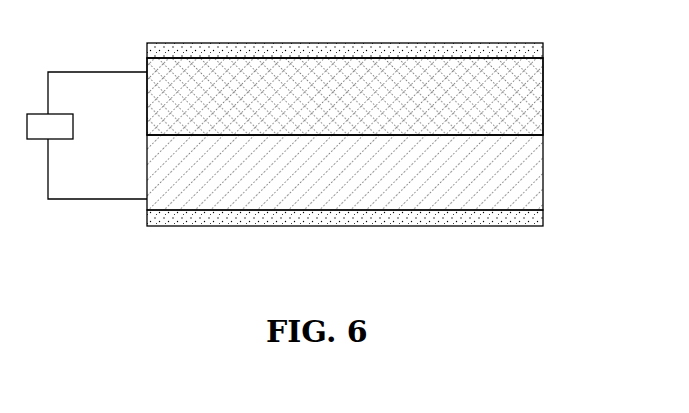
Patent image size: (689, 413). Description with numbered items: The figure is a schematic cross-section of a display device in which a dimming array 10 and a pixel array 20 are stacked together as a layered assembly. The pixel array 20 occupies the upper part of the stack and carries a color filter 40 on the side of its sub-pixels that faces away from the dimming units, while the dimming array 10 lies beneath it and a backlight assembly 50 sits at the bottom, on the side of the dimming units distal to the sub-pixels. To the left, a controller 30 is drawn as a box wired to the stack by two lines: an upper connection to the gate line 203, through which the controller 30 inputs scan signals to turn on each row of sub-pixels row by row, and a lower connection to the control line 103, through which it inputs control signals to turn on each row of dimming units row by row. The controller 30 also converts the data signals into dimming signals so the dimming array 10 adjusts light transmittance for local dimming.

The dimming array 10 is at (535, 180).
The pixel array 20 is at (534, 95).
The controller 30 is at (50, 126).
The color filter 40 is at (515, 52).
The backlight assembly 50 is at (535, 218).
The control line 103 is at (98, 207).
The gate line 203 is at (110, 63).